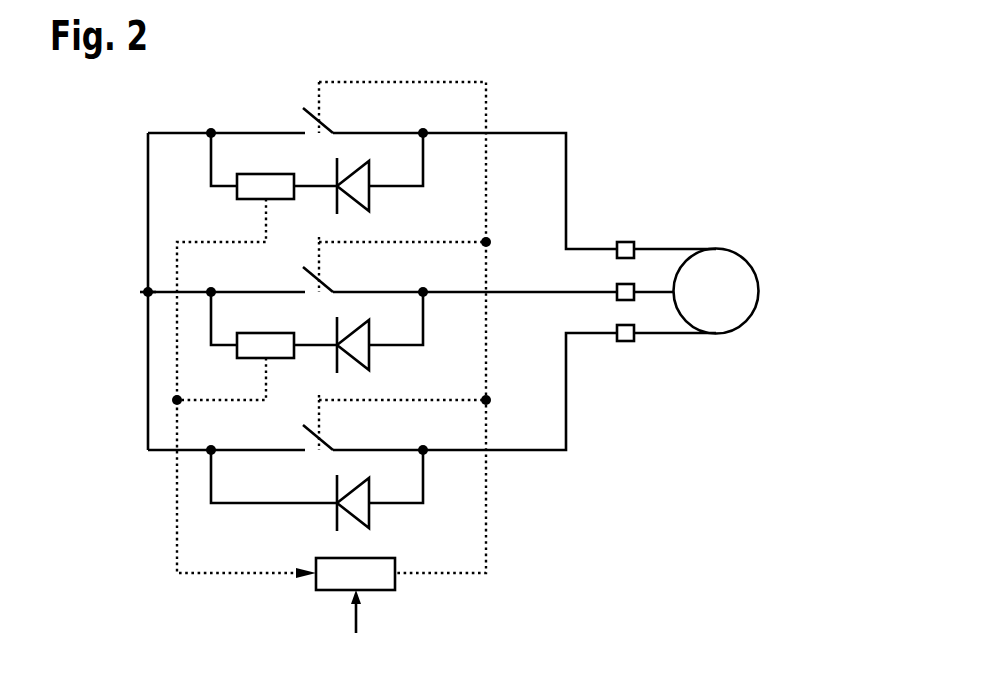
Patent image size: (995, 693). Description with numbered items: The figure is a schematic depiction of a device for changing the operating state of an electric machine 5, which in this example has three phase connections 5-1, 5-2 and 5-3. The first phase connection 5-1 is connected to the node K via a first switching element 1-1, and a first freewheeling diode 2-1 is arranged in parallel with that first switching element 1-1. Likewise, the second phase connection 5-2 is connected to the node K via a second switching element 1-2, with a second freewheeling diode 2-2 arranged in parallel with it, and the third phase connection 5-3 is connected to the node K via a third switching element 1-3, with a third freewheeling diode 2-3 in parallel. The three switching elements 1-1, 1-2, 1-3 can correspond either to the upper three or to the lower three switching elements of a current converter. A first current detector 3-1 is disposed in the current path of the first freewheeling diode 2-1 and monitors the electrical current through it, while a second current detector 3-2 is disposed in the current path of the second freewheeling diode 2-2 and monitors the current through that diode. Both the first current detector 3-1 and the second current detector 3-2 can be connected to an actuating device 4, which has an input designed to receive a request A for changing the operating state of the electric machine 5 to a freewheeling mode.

The first switching element 1-1 is at (328, 130).
The second switching element 1-2 is at (328, 289).
The third switching element 1-3 is at (328, 447).
The first freewheeling diode 2-1 is at (370, 198).
The second freewheeling diode 2-2 is at (370, 357).
The third freewheeling diode 2-3 is at (370, 515).
The first current detector 3-1 is at (257, 200).
The second current detector 3-2 is at (257, 359).
The actuating device 4 is at (395, 582).
The electric machine 5 is at (760, 291).
The first phase connection 5-1 is at (636, 247).
The second phase connection 5-2 is at (636, 298).
The third phase connection 5-3 is at (636, 340).
The node K is at (148, 292).
The request A is at (348, 613).